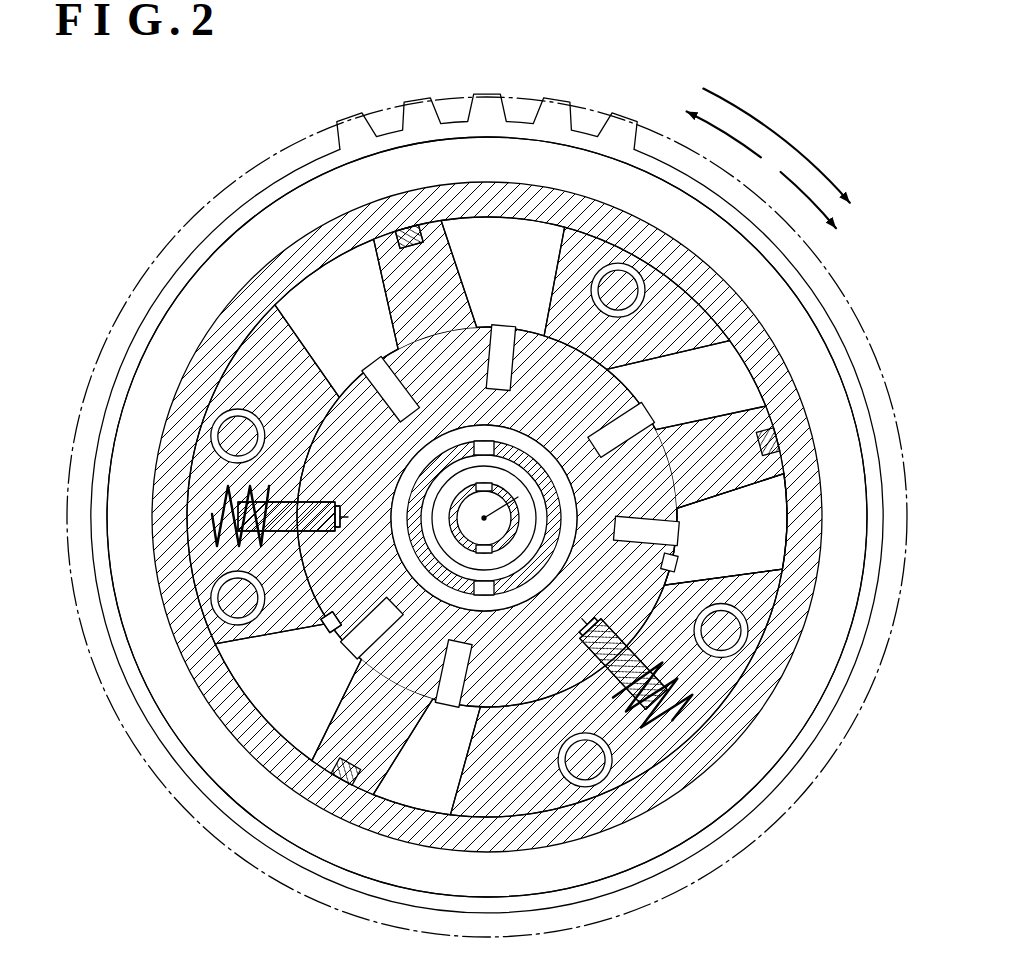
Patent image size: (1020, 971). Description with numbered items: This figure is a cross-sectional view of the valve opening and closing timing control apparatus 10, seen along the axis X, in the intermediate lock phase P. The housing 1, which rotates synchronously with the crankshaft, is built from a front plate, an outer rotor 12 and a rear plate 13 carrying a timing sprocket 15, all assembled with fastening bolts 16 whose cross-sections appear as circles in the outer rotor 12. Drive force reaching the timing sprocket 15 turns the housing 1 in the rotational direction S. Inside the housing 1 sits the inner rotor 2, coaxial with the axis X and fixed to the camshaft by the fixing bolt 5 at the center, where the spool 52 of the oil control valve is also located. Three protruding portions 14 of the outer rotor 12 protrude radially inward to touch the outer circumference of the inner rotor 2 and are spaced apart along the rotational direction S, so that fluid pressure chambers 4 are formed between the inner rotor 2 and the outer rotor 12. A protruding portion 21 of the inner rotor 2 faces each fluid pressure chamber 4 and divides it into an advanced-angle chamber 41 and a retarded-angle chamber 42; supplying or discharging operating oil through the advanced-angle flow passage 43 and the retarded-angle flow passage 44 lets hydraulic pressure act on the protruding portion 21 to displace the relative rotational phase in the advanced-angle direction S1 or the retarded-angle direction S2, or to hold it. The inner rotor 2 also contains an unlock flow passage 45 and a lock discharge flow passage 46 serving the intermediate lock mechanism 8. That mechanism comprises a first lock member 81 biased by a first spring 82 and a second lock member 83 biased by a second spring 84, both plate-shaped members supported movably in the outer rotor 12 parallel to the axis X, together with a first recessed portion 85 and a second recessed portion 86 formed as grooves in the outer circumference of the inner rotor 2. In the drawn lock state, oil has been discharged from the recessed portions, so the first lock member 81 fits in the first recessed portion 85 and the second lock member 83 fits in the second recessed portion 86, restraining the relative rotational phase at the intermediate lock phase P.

The housing 1 is at (220, 215).
The inner rotor 2 is at (340, 412).
The fluid pressure chamber 4 is at (725, 529).
The fixing bolt 5 is at (465, 420).
The intermediate lock mechanism 8 is at (212, 500).
The valve opening and closing timing control apparatus 10 is at (220, 125).
The outer rotor 12 is at (522, 185).
The rear plate 13 is at (165, 305).
The protruding portion 14 is at (290, 345).
The timing sprocket 15 is at (345, 128).
The fastening bolt 16 is at (628, 285).
The protruding portion 21 is at (415, 240).
The advanced-angle chamber 41 is at (305, 314).
The retarded-angle chamber 42 is at (470, 264).
The advanced-angle flow passage 43 is at (392, 385).
The retarded-angle flow passage 44 is at (499, 352).
The unlock flow passage 45 is at (665, 560).
The lock discharge flow passage 46 is at (331, 622).
The spool 52 is at (498, 497).
The first lock member 81 is at (298, 500).
The first spring 82 is at (215, 525).
The second lock member 83 is at (630, 668).
The second spring 84 is at (652, 740).
The first recessed portion 85 is at (305, 540).
The second recessed portion 86 is at (590, 665).
The intermediate lock phase P is at (410, 240).
The axis X is at (488, 515).
The rotational direction S is at (776, 146).
The advanced-angle direction S1 is at (822, 215).
The retarded-angle direction S2 is at (706, 125).